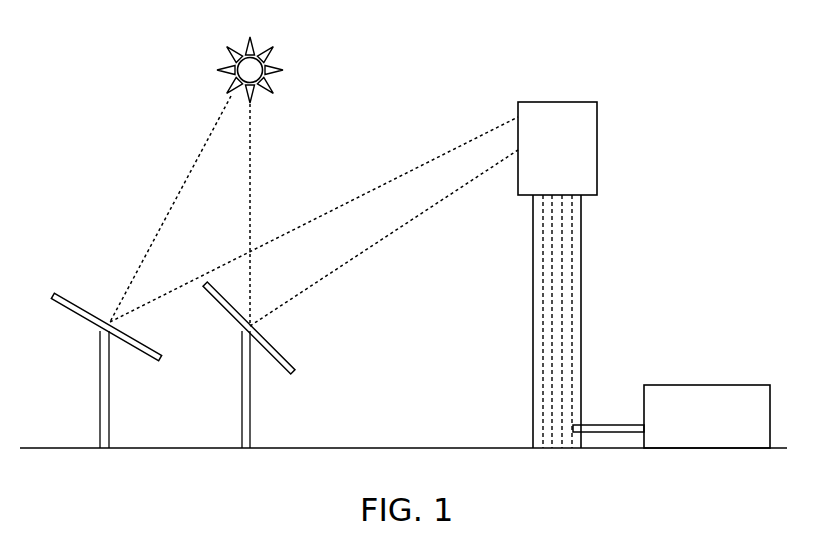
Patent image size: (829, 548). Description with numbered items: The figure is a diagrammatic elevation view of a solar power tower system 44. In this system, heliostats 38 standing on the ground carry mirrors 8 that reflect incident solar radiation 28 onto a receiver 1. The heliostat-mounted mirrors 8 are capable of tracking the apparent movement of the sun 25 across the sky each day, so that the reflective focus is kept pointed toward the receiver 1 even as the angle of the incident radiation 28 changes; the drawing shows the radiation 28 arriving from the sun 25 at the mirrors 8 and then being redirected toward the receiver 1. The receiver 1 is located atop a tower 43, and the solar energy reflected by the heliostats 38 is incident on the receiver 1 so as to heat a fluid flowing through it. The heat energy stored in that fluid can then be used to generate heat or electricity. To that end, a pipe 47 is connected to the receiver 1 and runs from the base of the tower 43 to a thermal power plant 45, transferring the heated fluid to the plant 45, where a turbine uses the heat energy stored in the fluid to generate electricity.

The receiver 1 is at (580, 142).
The mirrors 8 is at (279, 365).
The sun 25 is at (270, 61).
The incident solar radiation 28 is at (314, 211).
The heliostats 38 is at (225, 410).
The tower 43 is at (590, 320).
The solar power tower system 44 is at (115, 110).
The thermal power plant 45 is at (707, 383).
The pipe 47 is at (610, 387).